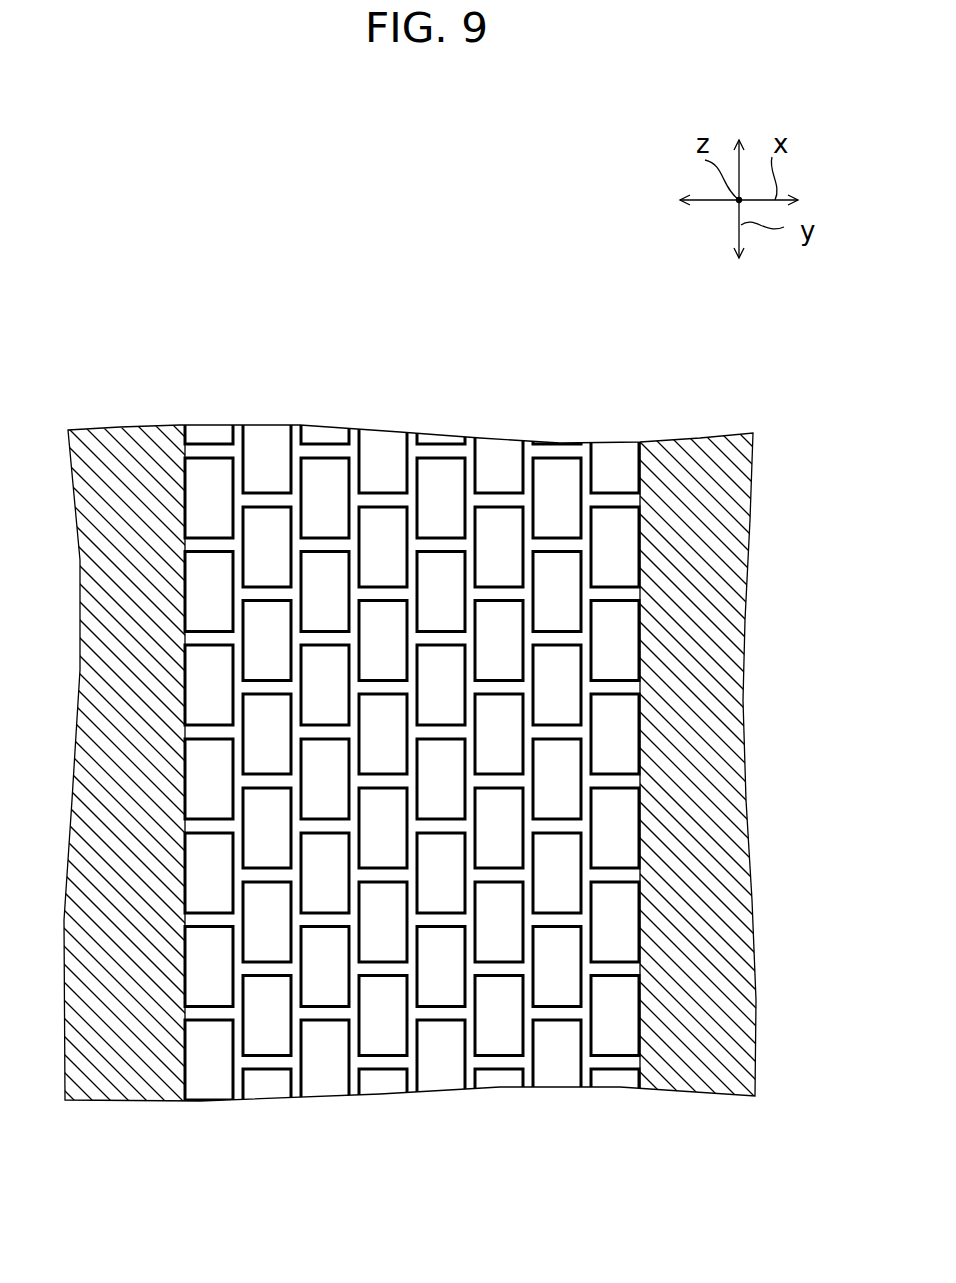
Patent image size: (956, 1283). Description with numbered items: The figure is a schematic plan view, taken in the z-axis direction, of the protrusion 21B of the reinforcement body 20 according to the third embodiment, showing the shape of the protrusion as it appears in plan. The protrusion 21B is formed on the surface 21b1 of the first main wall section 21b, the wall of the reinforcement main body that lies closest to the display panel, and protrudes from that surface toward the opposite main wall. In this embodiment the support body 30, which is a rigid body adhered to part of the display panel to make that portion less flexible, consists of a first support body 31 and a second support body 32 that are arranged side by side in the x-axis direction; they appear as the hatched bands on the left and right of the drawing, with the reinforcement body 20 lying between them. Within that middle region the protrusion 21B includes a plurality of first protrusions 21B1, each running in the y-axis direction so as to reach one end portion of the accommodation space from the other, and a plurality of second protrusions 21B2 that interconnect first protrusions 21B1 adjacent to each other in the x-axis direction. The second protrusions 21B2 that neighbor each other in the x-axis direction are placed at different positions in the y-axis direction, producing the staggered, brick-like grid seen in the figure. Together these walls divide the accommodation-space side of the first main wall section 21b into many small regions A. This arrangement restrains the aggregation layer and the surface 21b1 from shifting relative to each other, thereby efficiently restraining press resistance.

The reinforcement body 20 is at (461, 434).
The protrusion 21B is at (558, 533).
The first protrusions 21B1 is at (305, 1060).
The second protrusions 21B2 is at (383, 1089).
The first main wall section 21b is at (266, 1103).
The surface 21b1 is at (558, 1062).
The support body 30 is at (478, 776).
The first support body 31 is at (99, 1101).
The second support body 32 is at (680, 1090).
The regions A is at (455, 513).